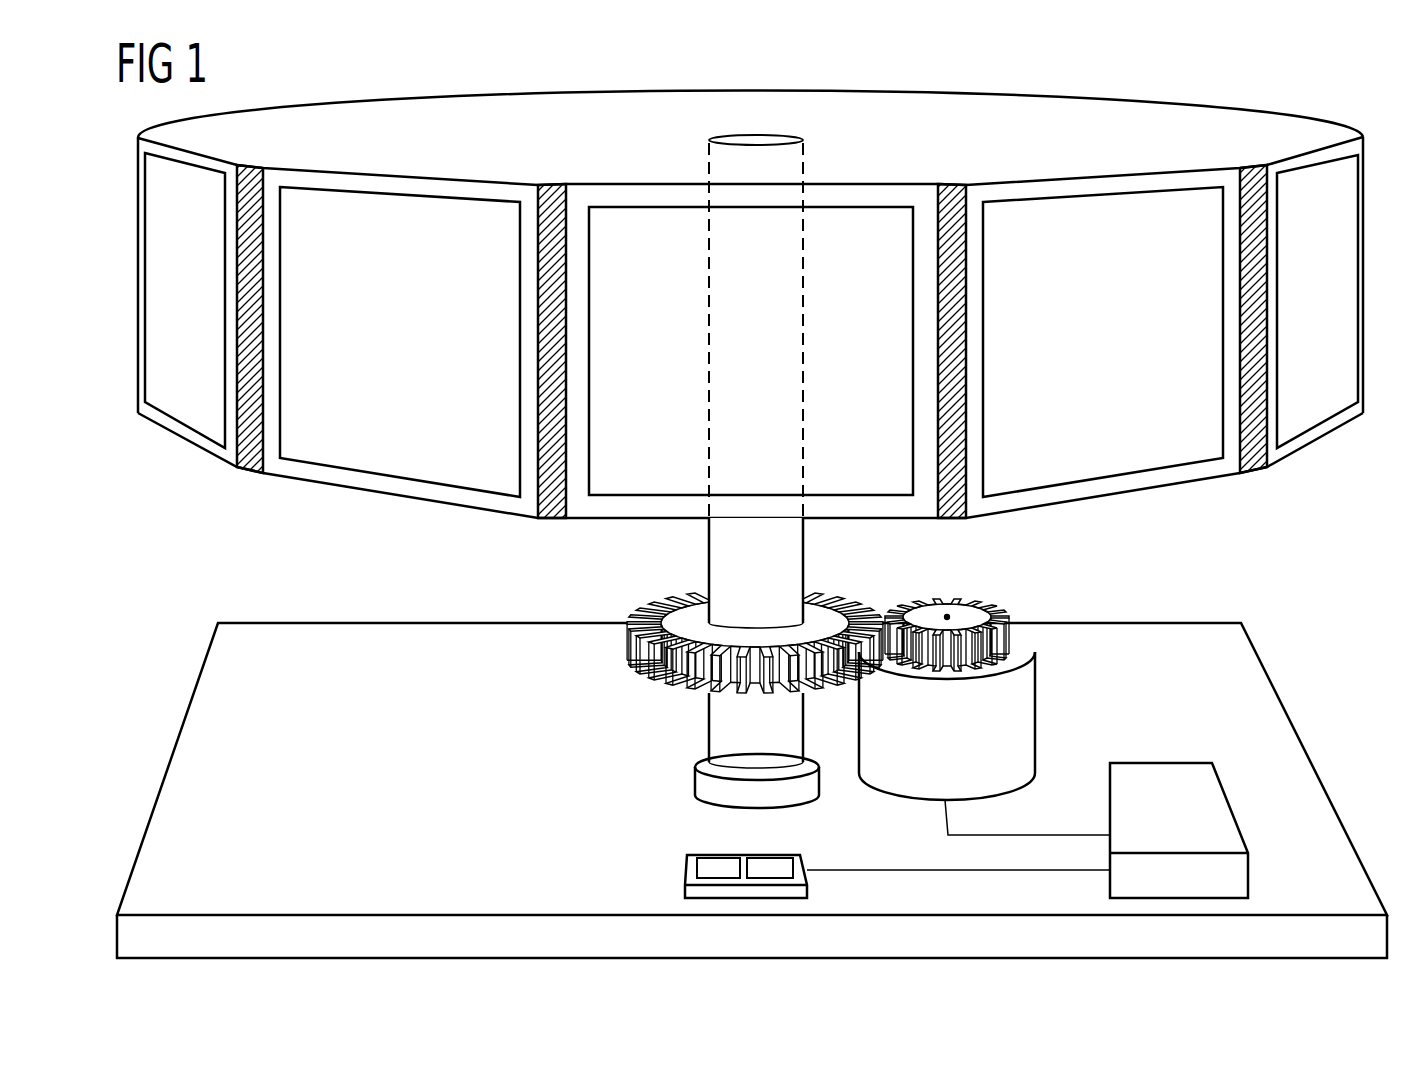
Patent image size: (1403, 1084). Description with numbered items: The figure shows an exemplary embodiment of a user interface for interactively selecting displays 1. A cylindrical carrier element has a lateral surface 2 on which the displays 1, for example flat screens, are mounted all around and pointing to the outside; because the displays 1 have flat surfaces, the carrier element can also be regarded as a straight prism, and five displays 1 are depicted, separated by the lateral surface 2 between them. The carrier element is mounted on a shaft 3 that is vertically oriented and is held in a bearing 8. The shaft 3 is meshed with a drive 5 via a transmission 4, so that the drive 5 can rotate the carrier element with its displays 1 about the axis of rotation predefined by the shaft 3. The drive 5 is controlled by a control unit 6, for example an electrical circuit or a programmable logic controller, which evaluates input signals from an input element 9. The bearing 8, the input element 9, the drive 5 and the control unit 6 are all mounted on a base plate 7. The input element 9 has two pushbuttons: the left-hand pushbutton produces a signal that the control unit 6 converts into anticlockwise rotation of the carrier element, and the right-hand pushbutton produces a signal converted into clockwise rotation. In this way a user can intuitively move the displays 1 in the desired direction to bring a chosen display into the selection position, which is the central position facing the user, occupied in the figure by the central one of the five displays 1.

The displays 1 is at (200, 423).
The lateral surface 2 is at (1252, 467).
The shaft 3 is at (790, 551).
The transmission 4 is at (838, 620).
The drive 5 is at (1027, 713).
The control unit 6 is at (1175, 777).
The base plate 7 is at (1350, 863).
The bearing 8 is at (700, 783).
The input element 9 is at (800, 867).